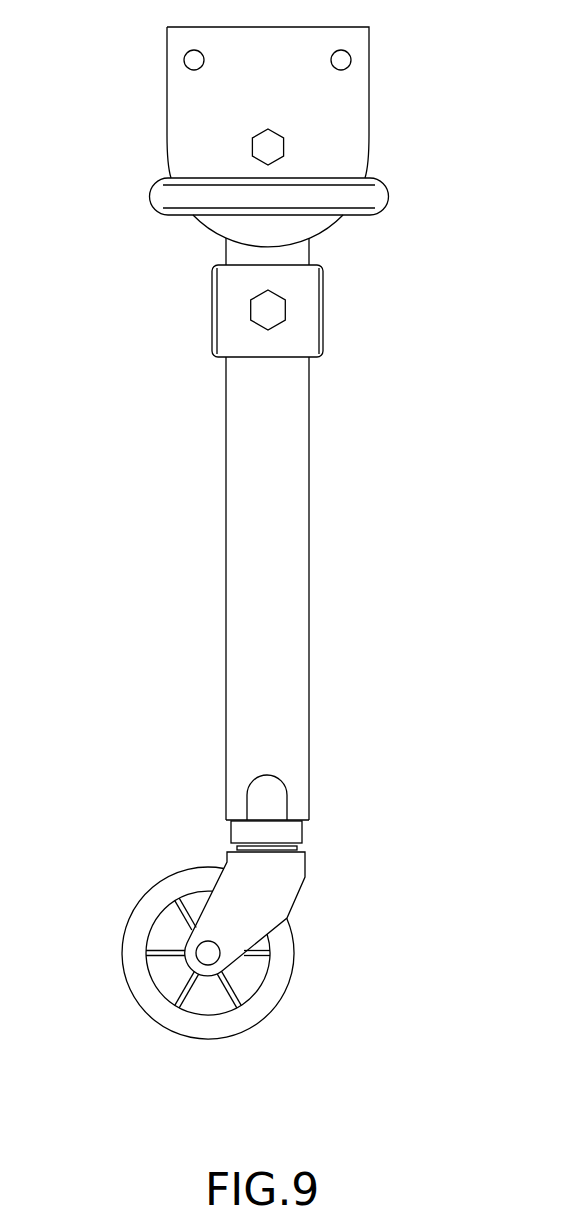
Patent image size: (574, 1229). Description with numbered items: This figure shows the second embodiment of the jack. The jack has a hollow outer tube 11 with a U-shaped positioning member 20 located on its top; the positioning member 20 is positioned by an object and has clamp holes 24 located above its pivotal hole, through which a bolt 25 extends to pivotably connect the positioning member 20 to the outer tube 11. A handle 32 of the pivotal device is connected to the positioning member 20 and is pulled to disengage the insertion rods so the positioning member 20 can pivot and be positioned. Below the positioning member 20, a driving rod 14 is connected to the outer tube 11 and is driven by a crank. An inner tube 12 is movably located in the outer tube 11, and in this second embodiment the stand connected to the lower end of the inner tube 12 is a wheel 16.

The outer tube 11 is at (243, 450).
The inner tube 12 is at (231, 832).
The driving rod 14 is at (265, 310).
The wheel 16 is at (133, 942).
The positioning member 20 is at (355, 110).
The clamp holes 24 is at (351, 59).
The bolt 25 is at (265, 147).
The handle 32 is at (365, 196).